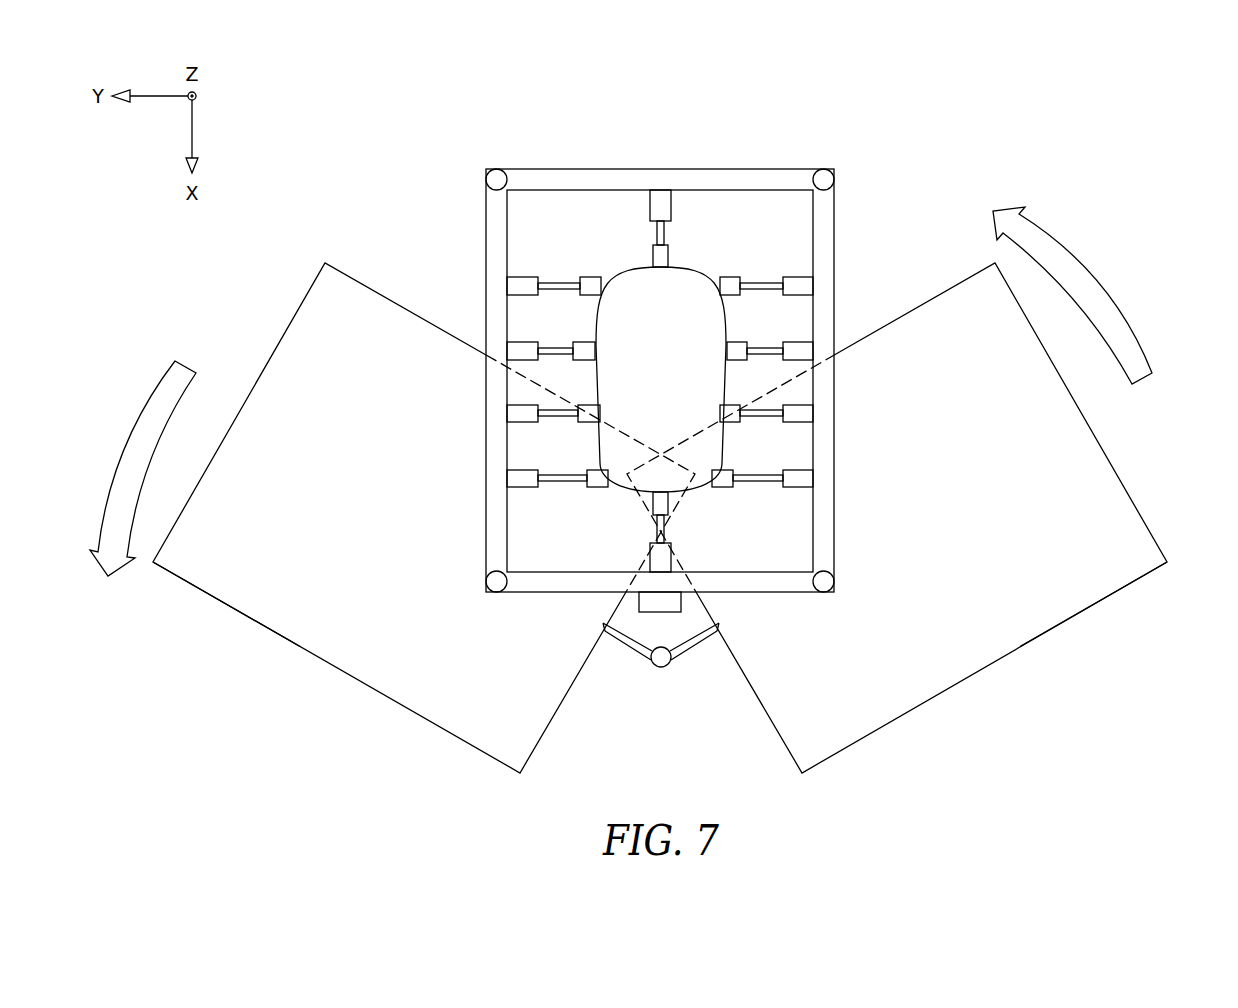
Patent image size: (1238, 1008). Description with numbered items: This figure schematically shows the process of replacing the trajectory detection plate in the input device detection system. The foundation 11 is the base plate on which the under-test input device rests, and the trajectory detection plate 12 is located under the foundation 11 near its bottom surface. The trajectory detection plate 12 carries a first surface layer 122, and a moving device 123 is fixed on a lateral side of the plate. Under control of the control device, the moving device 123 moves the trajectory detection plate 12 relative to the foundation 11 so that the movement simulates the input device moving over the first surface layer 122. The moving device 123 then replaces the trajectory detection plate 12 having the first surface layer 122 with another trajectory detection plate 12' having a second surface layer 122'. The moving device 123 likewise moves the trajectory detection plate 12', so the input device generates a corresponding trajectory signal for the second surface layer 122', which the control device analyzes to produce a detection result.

The foundation 11 is at (713, 169).
The trajectory detection plate 12 is at (424, 518).
The trajectory detection plate 12' is at (921, 518).
The first surface layer 122 is at (226, 604).
The second surface layer 122' is at (1095, 604).
The moving device 123 is at (660, 668).